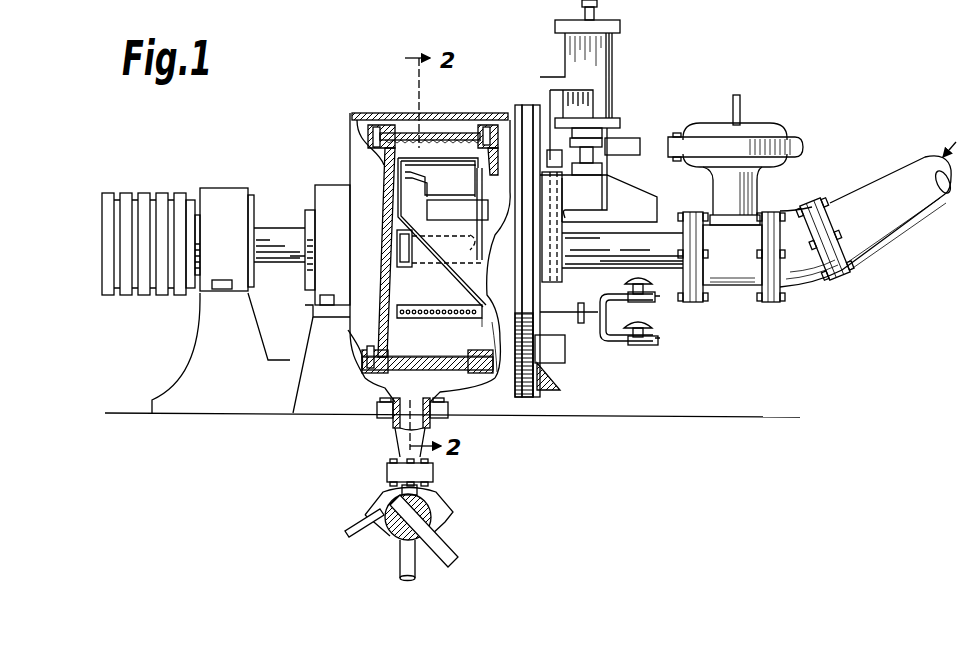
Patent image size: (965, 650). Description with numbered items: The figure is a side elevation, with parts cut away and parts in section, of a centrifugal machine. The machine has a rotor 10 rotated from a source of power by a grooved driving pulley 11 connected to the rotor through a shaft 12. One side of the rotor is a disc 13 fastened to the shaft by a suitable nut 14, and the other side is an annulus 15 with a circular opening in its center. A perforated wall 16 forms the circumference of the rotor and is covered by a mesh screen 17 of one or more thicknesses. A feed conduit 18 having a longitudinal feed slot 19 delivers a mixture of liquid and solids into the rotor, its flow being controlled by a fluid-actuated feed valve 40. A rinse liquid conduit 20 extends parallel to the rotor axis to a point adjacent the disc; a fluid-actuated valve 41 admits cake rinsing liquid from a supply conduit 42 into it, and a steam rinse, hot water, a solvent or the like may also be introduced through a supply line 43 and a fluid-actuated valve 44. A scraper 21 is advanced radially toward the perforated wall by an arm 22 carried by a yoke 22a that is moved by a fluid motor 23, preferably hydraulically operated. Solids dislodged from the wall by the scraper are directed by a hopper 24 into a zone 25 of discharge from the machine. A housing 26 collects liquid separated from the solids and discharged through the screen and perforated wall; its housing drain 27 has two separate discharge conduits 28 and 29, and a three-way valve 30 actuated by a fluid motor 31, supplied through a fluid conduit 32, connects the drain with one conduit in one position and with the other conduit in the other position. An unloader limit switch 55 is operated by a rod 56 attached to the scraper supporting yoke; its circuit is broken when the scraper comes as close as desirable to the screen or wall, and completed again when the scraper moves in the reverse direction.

The rotor 10 is at (442, 348).
The grooved driving pulley 11 is at (136, 205).
The shaft 12 is at (266, 228).
The disc 13 is at (386, 170).
The nut 14 is at (402, 267).
The annulus 15 is at (494, 133).
The perforated wall 16 is at (423, 136).
The mesh screen 17 is at (468, 138).
The feed conduit 18 is at (656, 242).
The longitudinal feed slot 19 is at (470, 262).
The rinse liquid conduit 20 is at (447, 319).
The scraper 21 is at (440, 157).
The arm 22 is at (465, 212).
The yoke 22a is at (648, 205).
The fluid motor 23 is at (612, 55).
The hopper 24 is at (462, 276).
The zone of discharge 25 is at (557, 378).
The housing 26 is at (395, 118).
The housing drain 27 is at (390, 383).
The discharge conduit 28 is at (440, 547).
The discharge conduit 29 is at (405, 565).
The three-way valve 30 is at (395, 536).
The fluid motor 31 is at (440, 503).
The fluid conduit 32 is at (370, 521).
The fluid-actuated feed valve 40 is at (750, 196).
The fluid-actuated valve 41 is at (627, 282).
The supply conduit 42 is at (653, 300).
The supply line 43 is at (648, 344).
The fluid-actuated valve 44 is at (650, 318).
The unloader limit switch 55 is at (634, 140).
The rod 56 is at (606, 166).